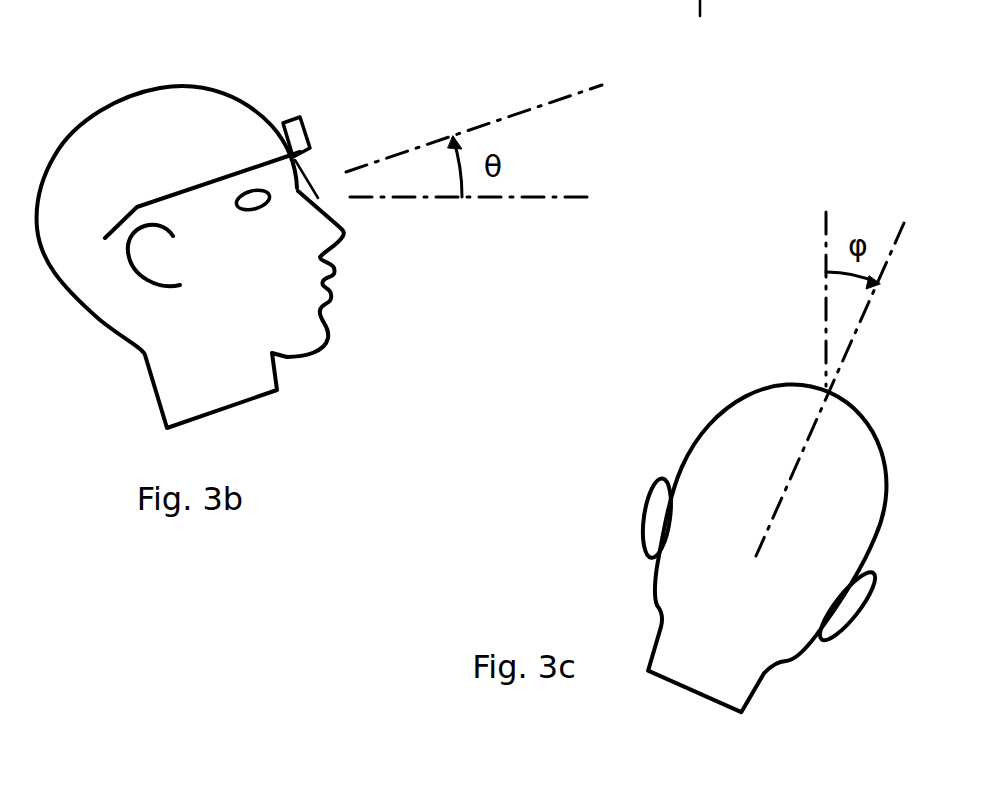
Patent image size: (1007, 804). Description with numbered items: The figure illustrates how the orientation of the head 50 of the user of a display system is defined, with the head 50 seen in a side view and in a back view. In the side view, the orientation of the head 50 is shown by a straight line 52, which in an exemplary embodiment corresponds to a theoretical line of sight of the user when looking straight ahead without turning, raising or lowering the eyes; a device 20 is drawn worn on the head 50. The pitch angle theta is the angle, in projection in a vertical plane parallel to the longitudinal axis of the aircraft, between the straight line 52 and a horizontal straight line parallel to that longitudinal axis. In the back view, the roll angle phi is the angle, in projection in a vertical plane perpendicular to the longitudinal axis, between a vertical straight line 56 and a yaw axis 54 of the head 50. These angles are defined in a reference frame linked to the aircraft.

In FIG. 3B, the head of the user 50 is at (183, 84).
In FIG. 3C, the head of the user 50 is at (743, 393).
In FIG. 3B, the head-mounted device 20 is at (303, 118).
In FIG. 3B, the straight line 52 is at (510, 113).
In FIG. 3C, the vertical straight line 56 is at (823, 233).
In FIG. 3C, the yaw axis of the head 54 is at (863, 320).